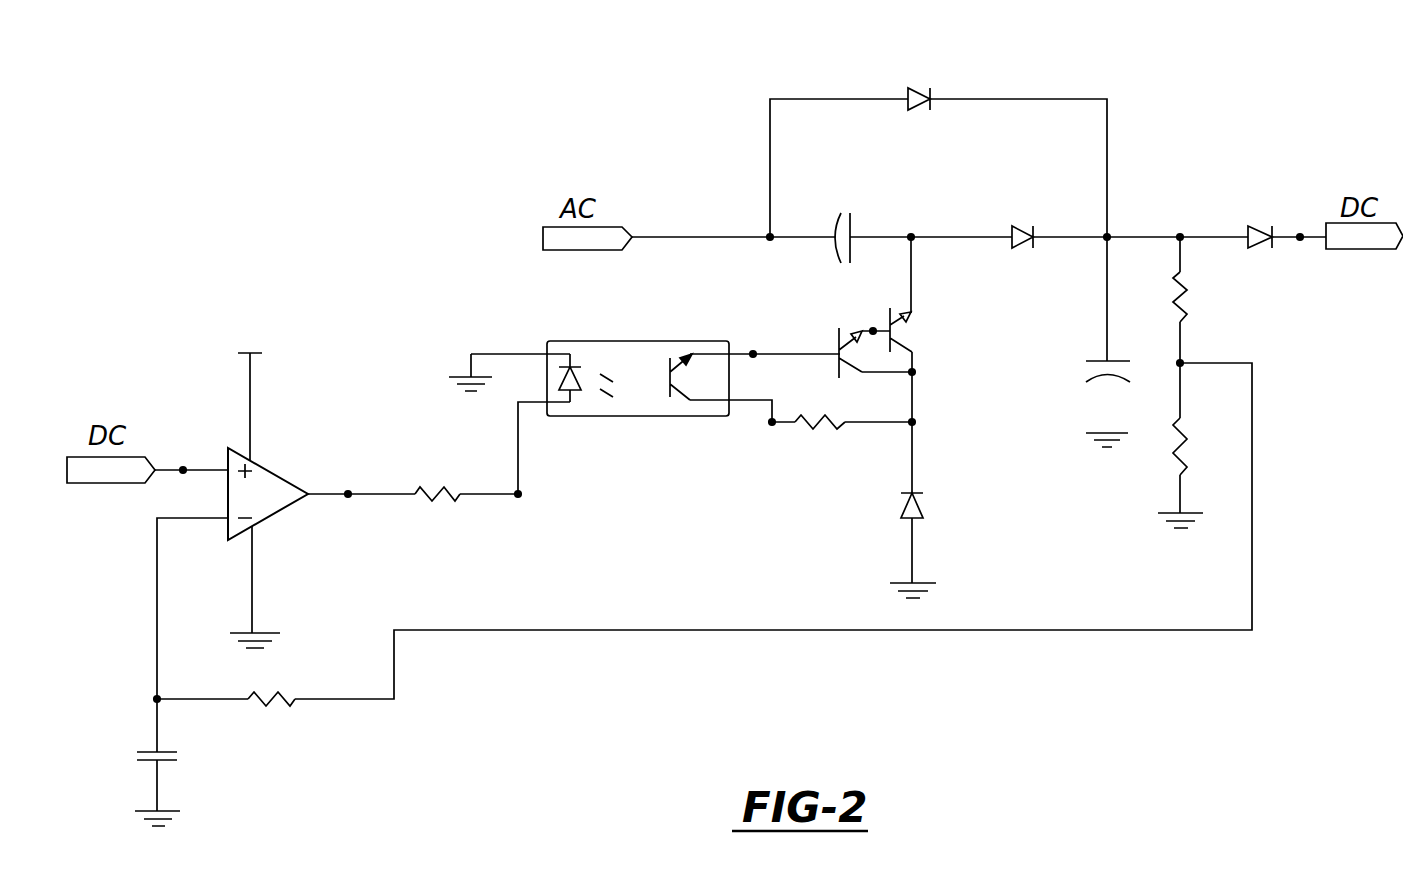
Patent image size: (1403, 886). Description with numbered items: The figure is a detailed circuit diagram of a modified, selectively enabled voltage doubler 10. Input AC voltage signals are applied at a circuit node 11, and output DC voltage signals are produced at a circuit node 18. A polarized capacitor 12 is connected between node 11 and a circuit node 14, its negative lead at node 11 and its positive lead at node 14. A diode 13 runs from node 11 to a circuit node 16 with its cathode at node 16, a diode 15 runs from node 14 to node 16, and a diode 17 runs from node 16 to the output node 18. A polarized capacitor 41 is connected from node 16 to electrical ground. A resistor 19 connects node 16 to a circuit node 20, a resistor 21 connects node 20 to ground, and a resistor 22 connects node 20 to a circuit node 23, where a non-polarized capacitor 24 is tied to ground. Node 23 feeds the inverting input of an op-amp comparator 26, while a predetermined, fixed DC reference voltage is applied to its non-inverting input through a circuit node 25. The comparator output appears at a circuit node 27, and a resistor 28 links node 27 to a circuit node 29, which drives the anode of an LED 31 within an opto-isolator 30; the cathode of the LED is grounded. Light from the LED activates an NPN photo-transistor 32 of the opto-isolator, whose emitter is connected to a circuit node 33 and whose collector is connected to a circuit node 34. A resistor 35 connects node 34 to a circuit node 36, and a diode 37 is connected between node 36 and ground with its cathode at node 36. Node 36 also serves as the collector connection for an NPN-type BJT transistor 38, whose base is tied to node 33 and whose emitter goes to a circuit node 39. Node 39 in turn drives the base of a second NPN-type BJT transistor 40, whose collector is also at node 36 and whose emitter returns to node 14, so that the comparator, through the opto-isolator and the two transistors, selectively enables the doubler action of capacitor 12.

The selectively enabled voltage doubler 10 is at (378, 216).
The circuit node 11 is at (761, 225).
The polarized capacitor 12 is at (850, 230).
The diode 13 is at (925, 88).
The circuit node 14 is at (929, 225).
The diode 15 is at (1020, 226).
The circuit node 16 is at (1126, 223).
The diode 17 is at (1250, 226).
The circuit node 18 is at (1300, 224).
The resistor 19 is at (1182, 292).
The circuit node 20 is at (1199, 375).
The resistor 21 is at (1181, 450).
The resistor 22 is at (291, 699).
The circuit node 23 is at (138, 705).
The non-polarized capacitor 24 is at (171, 762).
The circuit node 25 is at (186, 456).
The op-amp comparator 26 is at (287, 481).
The circuit node 27 is at (347, 510).
The resistor 28 is at (432, 489).
The circuit node 29 is at (520, 507).
The opto-isolator 30 is at (682, 418).
The LED 31 is at (580, 392).
The photo-transistor 32 is at (668, 371).
The circuit node 33 is at (759, 370).
The circuit node 34 is at (764, 439).
The resistor 35 is at (818, 432).
The circuit node 36 is at (931, 419).
The diode 37 is at (924, 505).
The NPN-type BJT transistor 38 is at (838, 340).
The circuit node 39 is at (872, 313).
The NPN-type BJT transistor 40 is at (905, 340).
The polarized capacitor 41 is at (1098, 377).